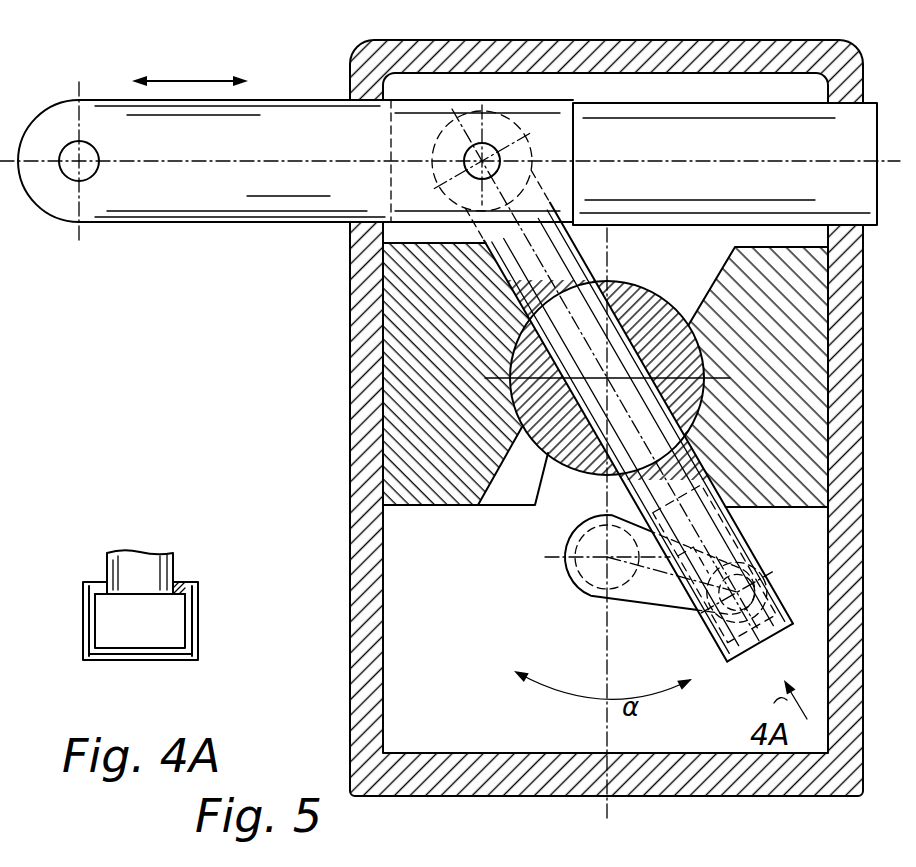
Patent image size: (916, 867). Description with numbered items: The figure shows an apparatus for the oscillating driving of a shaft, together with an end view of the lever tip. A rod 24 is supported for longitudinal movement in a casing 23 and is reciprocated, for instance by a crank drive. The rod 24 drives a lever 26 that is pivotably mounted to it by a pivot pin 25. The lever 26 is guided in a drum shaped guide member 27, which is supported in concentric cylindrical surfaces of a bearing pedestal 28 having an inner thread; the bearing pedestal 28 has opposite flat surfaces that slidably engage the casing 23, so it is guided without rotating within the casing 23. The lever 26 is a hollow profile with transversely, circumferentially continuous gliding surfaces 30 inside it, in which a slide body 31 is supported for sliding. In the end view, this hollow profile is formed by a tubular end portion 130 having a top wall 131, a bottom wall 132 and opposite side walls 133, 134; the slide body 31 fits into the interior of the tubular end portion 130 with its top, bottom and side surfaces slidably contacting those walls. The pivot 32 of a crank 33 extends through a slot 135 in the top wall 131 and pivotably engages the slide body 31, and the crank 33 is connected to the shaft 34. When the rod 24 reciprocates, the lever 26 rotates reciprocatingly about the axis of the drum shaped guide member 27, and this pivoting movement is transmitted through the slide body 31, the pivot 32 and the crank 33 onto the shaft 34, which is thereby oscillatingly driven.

In FIG. 5, the casing 23 is at (853, 66).
In FIG. 5, the rod 24 is at (288, 124).
In FIG. 5, the pivot pin 25 is at (484, 158).
In FIG. 5, the lever 26 is at (503, 257).
In FIG. 5, the drum shaped guide member 27 is at (553, 433).
In FIG. 5, the bearing pedestal 28 is at (428, 364).
In FIG. 5, the gliding surfaces 30 is at (703, 515).
In FIG. 5, the slide body 31 is at (757, 617).
In FIG. 4A, the slide body 31 is at (138, 643).
In FIG. 5, the pivot 32 is at (745, 590).
In FIG. 4A, the pivot 32 is at (113, 567).
In FIG. 5, the crank 33 is at (662, 593).
In FIG. 5, the shaft 34 is at (590, 570).
In FIG. 4A, the tubular end portion 130 is at (99, 670).
In FIG. 4A, the top wall 131 is at (175, 588).
In FIG. 4A, the bottom wall 132 is at (168, 658).
In FIG. 4A, the side wall 133 is at (88, 620).
In FIG. 4A, the side wall 134 is at (193, 620).
In FIG. 4A, the slot 135 is at (173, 597).